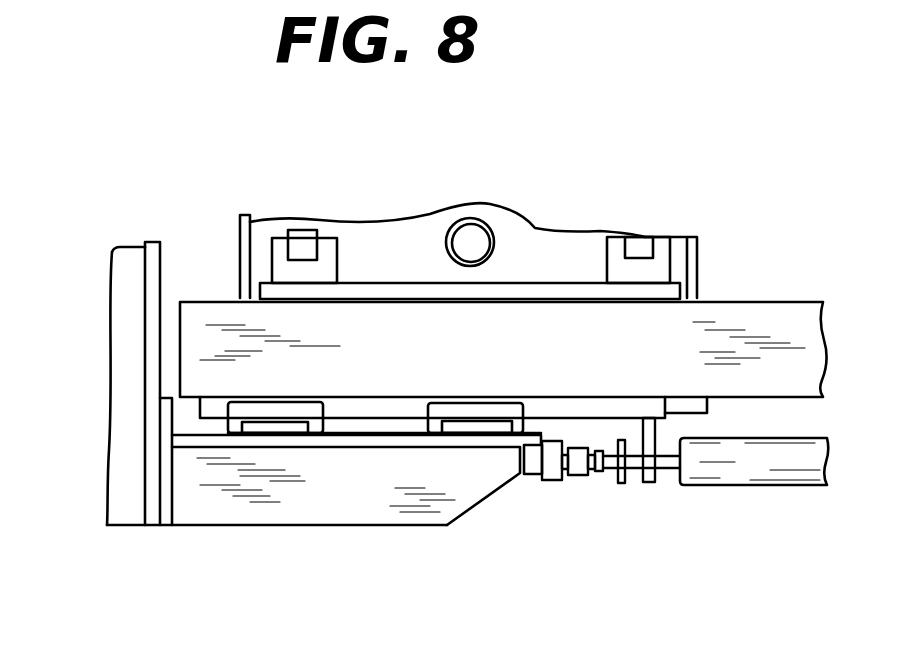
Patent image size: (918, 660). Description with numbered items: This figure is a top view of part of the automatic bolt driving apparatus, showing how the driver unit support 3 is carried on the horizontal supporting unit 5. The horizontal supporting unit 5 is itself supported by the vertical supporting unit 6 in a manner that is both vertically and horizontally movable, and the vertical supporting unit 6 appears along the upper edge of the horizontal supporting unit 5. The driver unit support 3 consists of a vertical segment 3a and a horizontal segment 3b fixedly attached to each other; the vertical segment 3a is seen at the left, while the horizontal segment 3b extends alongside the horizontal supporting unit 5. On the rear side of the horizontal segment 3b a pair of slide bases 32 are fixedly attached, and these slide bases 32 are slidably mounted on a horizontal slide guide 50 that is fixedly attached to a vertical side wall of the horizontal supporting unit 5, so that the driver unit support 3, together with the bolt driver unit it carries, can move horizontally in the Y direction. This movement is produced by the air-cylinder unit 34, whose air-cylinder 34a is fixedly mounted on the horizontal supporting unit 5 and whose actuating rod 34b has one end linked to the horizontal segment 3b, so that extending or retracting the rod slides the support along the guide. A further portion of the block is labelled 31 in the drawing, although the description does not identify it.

The driver unit support 3 is at (247, 527).
The vertical segment 3a is at (133, 366).
The horizontal segment 3b is at (350, 494).
The horizontal supporting unit 5 is at (577, 368).
The vertical supporting unit 6 is at (462, 206).
The upper portion of block 31 is at (370, 345).
The slide bases 32 is at (487, 412).
The horizontal slide guide 50 is at (613, 410).
The air-cylinder unit 34 is at (700, 488).
The air-cylinder 34a is at (753, 468).
The actuating rod 34b is at (614, 478).